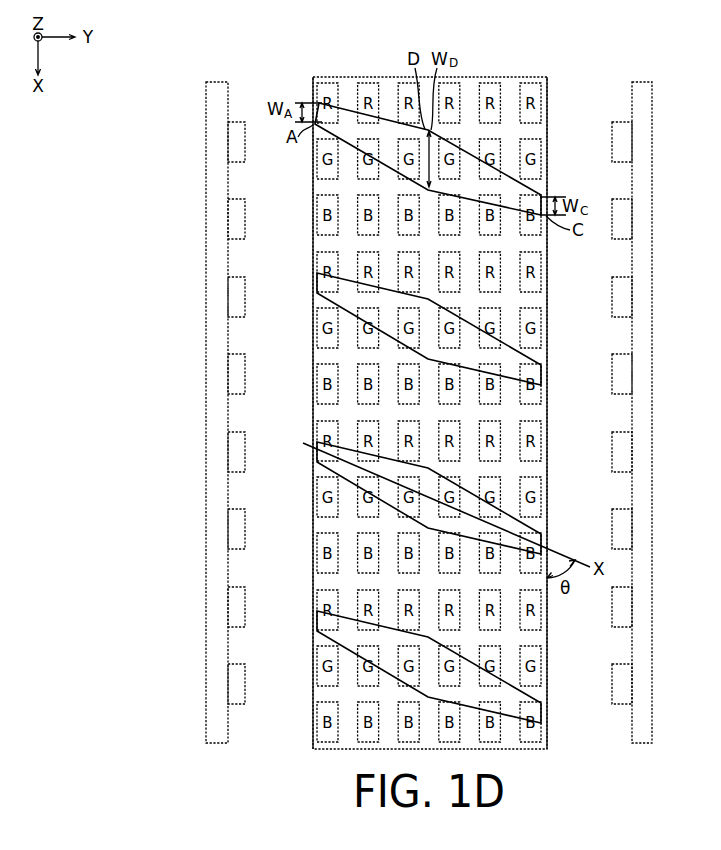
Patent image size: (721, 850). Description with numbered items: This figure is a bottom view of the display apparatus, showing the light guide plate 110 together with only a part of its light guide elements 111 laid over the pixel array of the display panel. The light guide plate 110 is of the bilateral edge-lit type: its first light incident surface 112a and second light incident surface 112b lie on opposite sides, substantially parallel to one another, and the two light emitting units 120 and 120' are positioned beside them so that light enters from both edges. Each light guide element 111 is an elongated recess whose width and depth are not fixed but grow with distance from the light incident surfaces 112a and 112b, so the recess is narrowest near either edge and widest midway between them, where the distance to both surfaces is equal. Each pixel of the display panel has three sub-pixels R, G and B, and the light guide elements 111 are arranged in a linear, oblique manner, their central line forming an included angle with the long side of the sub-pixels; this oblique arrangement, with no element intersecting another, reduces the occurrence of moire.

The light guide plate 110 is at (512, 88).
The light guide elements 111 is at (541, 192).
The first light incident surface 112a is at (312, 174).
The second light incident surface 112b is at (546, 145).
The light emitting unit 120 is at (220, 395).
The light emitting unit 120' is at (634, 395).